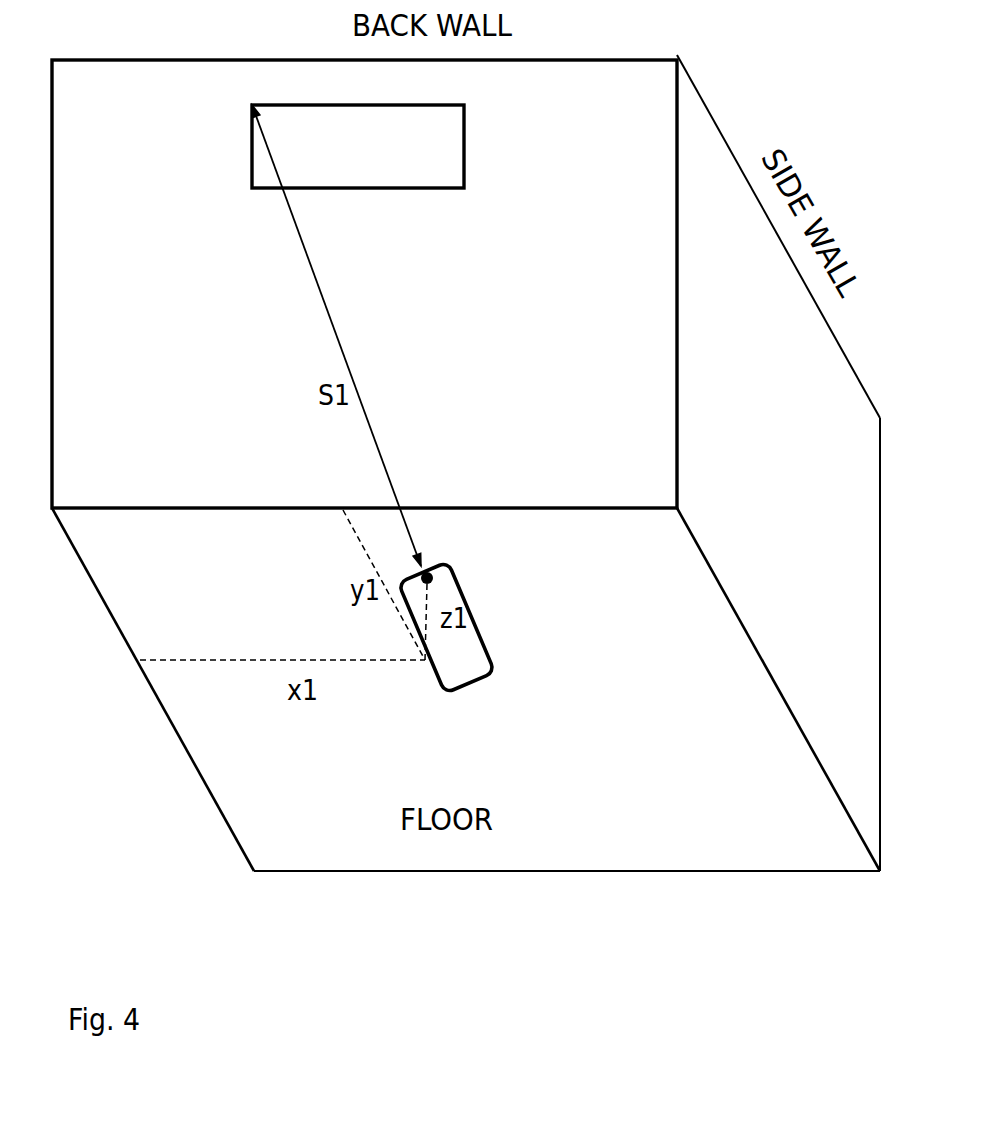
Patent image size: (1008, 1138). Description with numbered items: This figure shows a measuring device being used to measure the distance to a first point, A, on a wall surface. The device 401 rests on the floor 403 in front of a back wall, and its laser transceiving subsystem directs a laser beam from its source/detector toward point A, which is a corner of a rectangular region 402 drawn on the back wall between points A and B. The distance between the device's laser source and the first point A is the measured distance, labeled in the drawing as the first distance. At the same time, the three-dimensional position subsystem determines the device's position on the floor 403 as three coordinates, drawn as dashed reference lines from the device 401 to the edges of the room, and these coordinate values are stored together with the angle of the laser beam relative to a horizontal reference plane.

The mobile device 401 is at (495, 665).
The target region on back wall 402 is at (464, 188).
The floor 403 is at (613, 868).